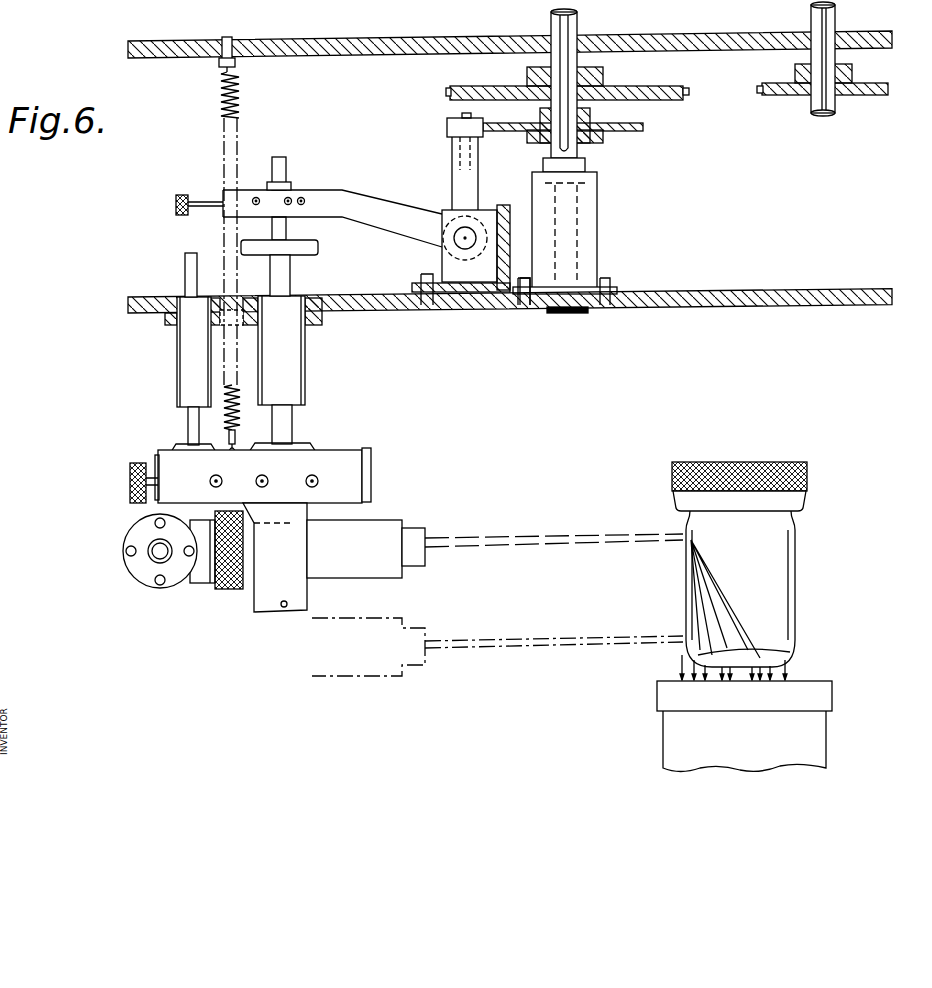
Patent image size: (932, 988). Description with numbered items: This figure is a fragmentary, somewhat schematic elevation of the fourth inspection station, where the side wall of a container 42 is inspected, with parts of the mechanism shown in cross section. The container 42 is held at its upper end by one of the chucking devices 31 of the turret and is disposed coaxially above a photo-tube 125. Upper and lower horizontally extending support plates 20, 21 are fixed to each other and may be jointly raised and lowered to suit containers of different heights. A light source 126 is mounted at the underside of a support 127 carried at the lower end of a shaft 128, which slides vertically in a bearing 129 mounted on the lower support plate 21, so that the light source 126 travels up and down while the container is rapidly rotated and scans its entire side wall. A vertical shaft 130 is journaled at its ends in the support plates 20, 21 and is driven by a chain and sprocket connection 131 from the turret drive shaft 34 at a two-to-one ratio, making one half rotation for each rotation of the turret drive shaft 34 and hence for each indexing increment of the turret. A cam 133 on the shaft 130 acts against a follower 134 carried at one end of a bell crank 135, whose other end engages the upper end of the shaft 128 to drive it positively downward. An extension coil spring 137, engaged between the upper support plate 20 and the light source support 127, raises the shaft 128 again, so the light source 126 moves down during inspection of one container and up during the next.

The upper support plate 20 is at (358, 58).
The lower support plate 21 is at (356, 295).
The chucking device 31 is at (808, 474).
The turret drive shaft 34 is at (836, 110).
The container 42 is at (797, 575).
The photo-tube 125 is at (815, 740).
The light source 126 is at (403, 589).
The light source support 127 is at (350, 452).
The shaft 128 is at (288, 418).
The bearing 129 is at (296, 355).
The vertical shaft 130 is at (574, 150).
The chain and sprocket connection 131 is at (766, 96).
The cam 133 is at (643, 128).
The follower 134 is at (447, 126).
The bell crank 135 is at (408, 206).
The extension coil spring 137 is at (239, 106).